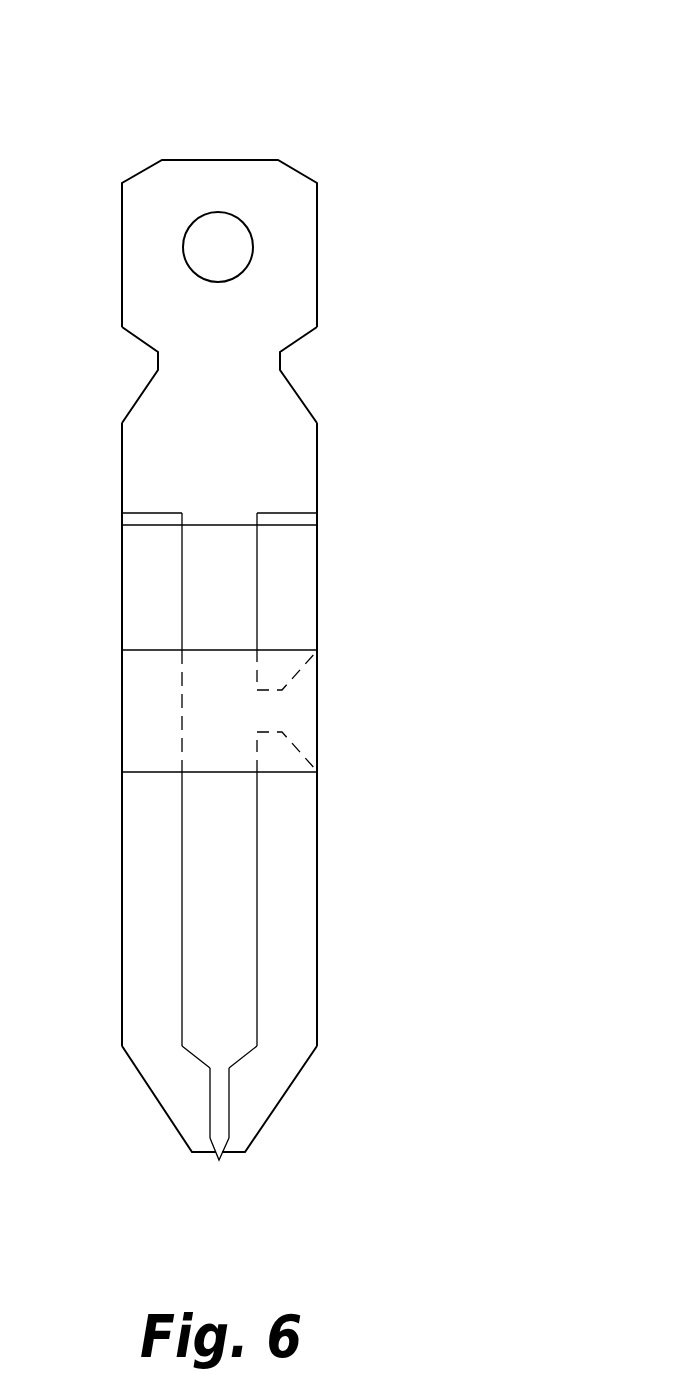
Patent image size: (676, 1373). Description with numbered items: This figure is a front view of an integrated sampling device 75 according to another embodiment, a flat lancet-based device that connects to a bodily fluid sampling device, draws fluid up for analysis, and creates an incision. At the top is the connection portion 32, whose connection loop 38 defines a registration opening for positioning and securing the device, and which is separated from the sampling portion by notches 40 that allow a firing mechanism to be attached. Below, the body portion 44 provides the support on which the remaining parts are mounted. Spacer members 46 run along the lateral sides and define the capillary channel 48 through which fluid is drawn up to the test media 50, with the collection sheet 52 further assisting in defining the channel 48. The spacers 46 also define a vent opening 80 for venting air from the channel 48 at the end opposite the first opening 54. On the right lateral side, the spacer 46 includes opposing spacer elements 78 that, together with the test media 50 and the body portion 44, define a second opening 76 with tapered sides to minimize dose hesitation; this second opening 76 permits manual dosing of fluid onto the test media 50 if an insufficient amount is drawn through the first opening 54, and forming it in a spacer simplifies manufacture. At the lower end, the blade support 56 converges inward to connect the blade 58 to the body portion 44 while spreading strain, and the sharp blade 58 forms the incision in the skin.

The integrated sampling device 75 is at (561, 114).
The connection portion 32 is at (317, 275).
The connection loop 38 is at (213, 243).
The notches 40 is at (284, 358).
The body portion 44 is at (122, 480).
The spacer elements 78 is at (316, 598).
The spacer members 46 is at (316, 528).
The vent opening 80 is at (215, 512).
The test media 50 is at (145, 700).
The second opening 76 is at (313, 704).
The capillary channel 48 is at (236, 963).
The collection sheet 52 is at (290, 1090).
The blade support 56 is at (205, 1052).
The blade 58 is at (217, 1125).
The first opening 54 is at (219, 1176).